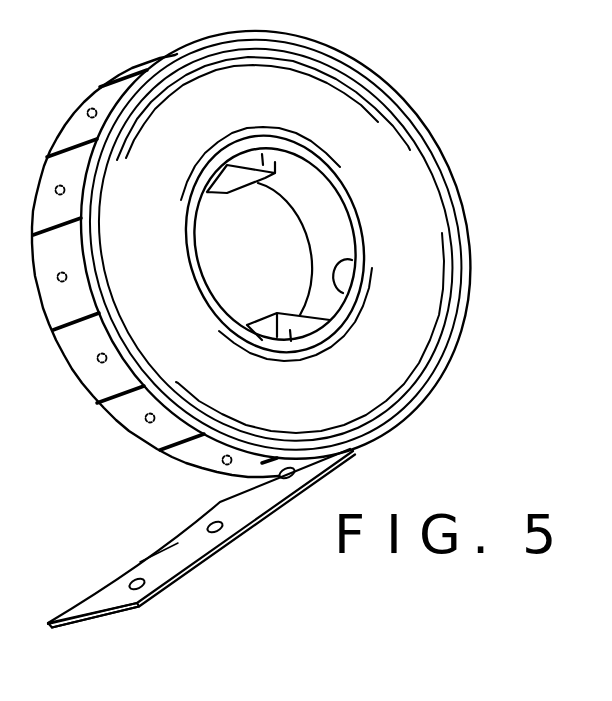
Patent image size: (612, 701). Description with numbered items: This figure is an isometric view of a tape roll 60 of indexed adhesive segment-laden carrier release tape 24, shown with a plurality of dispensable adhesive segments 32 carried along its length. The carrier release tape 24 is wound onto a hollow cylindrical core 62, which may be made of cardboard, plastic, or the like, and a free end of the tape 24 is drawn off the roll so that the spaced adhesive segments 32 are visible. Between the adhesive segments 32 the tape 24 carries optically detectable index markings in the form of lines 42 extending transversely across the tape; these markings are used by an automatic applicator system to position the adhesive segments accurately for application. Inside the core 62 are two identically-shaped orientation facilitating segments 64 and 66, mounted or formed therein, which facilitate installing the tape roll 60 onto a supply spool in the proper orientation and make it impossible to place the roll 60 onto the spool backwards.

The tape roll 60 is at (410, 113).
The hollow cylindrical core 62 is at (338, 288).
The orientation facilitating segment 64 is at (312, 328).
The orientation facilitating segment 66 is at (250, 160).
The adhesive segment-laden carrier release tape 24 is at (173, 555).
The adhesive segments 32 is at (142, 590).
The lines 42 is at (98, 618).